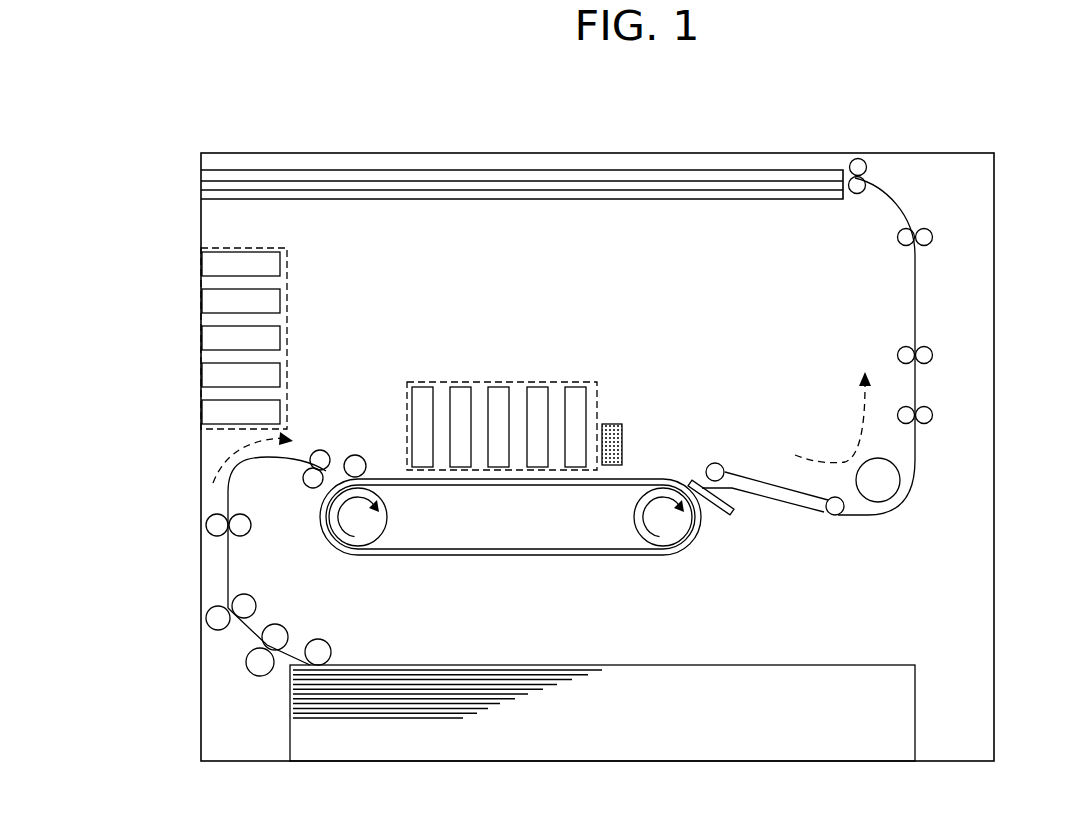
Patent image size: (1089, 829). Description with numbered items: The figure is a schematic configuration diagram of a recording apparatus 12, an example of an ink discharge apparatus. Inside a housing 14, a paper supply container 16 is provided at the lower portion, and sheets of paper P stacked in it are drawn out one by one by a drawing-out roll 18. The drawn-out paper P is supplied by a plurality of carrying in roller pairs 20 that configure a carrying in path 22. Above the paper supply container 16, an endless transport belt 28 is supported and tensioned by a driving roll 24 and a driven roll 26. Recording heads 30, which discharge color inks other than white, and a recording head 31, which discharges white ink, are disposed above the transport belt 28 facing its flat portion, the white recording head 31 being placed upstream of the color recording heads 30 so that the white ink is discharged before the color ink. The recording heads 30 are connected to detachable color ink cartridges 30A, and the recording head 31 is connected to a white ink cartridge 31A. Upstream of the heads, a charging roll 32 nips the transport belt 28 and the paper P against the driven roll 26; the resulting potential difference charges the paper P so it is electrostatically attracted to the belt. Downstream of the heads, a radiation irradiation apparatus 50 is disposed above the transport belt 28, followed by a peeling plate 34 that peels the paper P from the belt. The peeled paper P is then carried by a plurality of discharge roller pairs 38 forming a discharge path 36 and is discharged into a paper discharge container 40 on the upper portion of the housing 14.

The recording apparatus 12 is at (837, 145).
The housing 14 is at (995, 354).
The paper supply container 16 is at (917, 720).
The drawing-out roll 18 is at (331, 644).
The carrying in roller pairs 20 is at (321, 450).
The carrying in path 22 is at (227, 566).
The driving roll 24 is at (634, 516).
The driven roll 26 is at (389, 518).
The transport belt 28 is at (549, 557).
The recording heads 30 is at (460, 387).
The color ink cartridges 30A is at (281, 263).
The recording head 31 is at (425, 383).
The white ink cartridge 31A is at (218, 428).
The charging roll 32 is at (357, 455).
The peeling plate 34 is at (716, 516).
The discharge path 36 is at (917, 275).
The discharge roller pairs 38 is at (920, 228).
The paper discharge container 40 is at (800, 202).
The radiation irradiation apparatus 50 is at (612, 424).
The paper P is at (520, 486).